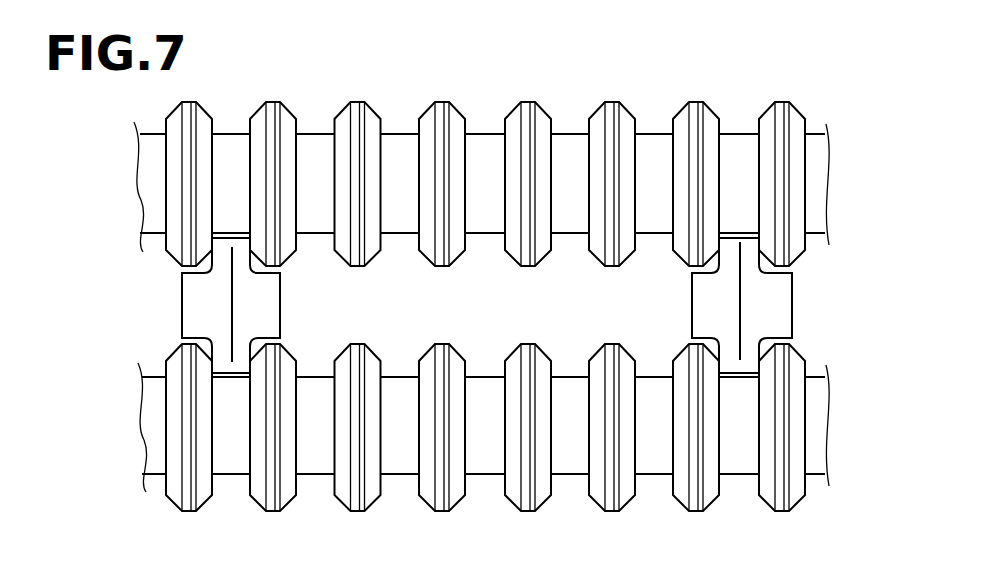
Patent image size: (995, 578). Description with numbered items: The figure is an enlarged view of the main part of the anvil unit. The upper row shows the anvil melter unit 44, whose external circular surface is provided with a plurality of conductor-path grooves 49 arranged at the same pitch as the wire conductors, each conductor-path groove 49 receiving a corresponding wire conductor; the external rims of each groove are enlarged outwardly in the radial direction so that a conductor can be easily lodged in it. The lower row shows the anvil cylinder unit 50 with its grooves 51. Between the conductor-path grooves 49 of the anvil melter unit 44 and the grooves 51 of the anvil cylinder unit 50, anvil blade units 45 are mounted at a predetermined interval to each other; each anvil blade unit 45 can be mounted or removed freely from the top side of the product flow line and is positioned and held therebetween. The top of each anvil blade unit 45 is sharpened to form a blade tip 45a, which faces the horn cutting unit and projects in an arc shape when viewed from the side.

The anvil melter unit 44 is at (157, 181).
The anvil blade unit 45 is at (190, 292).
The blade tip 45a is at (233, 287).
The conductor-path groove 49 is at (250, 128).
The anvil cylinder unit 50 is at (160, 422).
The groove 51 is at (250, 485).